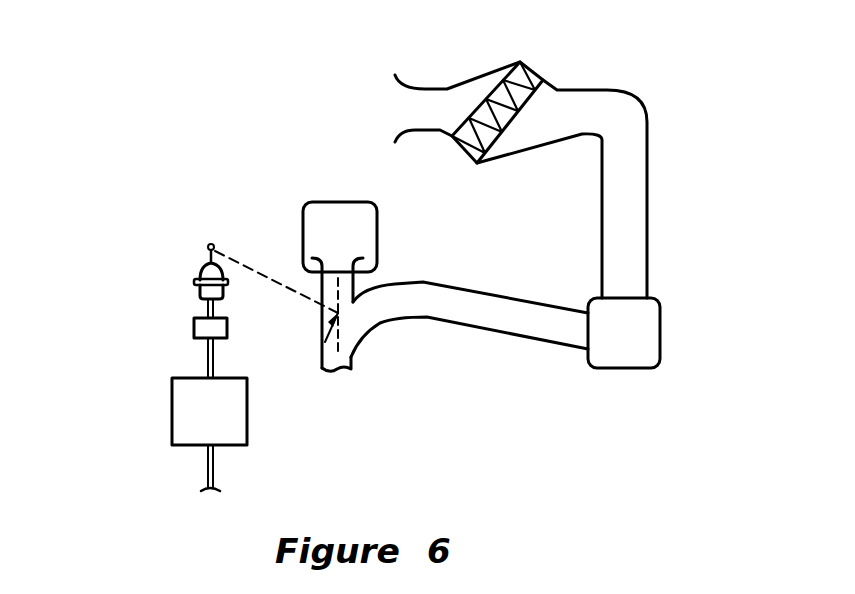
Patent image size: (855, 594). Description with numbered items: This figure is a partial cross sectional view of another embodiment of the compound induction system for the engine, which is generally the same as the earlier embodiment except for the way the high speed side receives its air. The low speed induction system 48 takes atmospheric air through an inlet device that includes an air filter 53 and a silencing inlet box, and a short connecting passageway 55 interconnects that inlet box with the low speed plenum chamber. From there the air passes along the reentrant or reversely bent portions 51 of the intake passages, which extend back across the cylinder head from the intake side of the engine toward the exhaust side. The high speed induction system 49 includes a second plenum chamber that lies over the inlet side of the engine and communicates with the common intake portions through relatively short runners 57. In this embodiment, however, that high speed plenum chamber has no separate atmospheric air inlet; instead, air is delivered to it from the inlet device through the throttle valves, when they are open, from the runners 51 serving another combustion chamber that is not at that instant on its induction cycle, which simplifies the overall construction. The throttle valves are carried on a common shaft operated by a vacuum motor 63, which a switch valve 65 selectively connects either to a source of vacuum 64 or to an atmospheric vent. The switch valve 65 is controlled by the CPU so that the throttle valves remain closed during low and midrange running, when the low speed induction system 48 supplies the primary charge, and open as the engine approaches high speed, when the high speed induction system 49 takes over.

The low speed induction system 48 is at (563, 193).
The high speed induction system 49 is at (298, 239).
The reentrant portion of intake passage 51 is at (520, 340).
The air filter 53 is at (540, 83).
The connecting passageway 55 is at (633, 101).
The runners 57 is at (336, 313).
The vacuum motor 63 is at (198, 274).
The source of vacuum 64 is at (178, 403).
The switch valve 65 is at (194, 330).